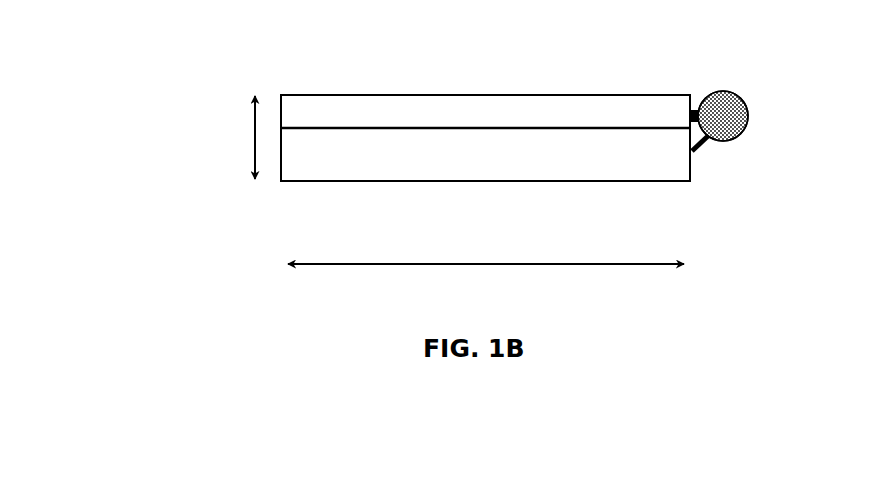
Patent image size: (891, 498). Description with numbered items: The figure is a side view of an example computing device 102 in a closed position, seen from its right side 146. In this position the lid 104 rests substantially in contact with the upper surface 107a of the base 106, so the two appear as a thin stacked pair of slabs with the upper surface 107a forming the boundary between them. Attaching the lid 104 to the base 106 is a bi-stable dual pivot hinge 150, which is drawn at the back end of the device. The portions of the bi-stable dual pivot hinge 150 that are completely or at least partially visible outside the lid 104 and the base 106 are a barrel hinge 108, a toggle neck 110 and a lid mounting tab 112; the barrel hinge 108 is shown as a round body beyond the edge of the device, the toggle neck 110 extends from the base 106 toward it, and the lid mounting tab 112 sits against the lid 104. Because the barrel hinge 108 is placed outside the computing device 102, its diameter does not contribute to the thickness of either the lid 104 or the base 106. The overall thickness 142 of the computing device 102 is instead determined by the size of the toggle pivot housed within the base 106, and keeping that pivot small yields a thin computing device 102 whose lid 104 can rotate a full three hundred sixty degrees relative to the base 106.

The computing device 102 is at (191, 102).
The lid 104 is at (493, 104).
The base 106 is at (397, 175).
The upper surface of the base 107a is at (452, 128).
The barrel hinge 108 is at (744, 114).
The toggle neck 110 is at (704, 144).
The lid mounting tab 112 is at (692, 108).
The thickness of the computing device 142 is at (256, 149).
The right side of the computing device 146 is at (708, 185).
The bi-stable dual pivot hinge 150 is at (757, 75).